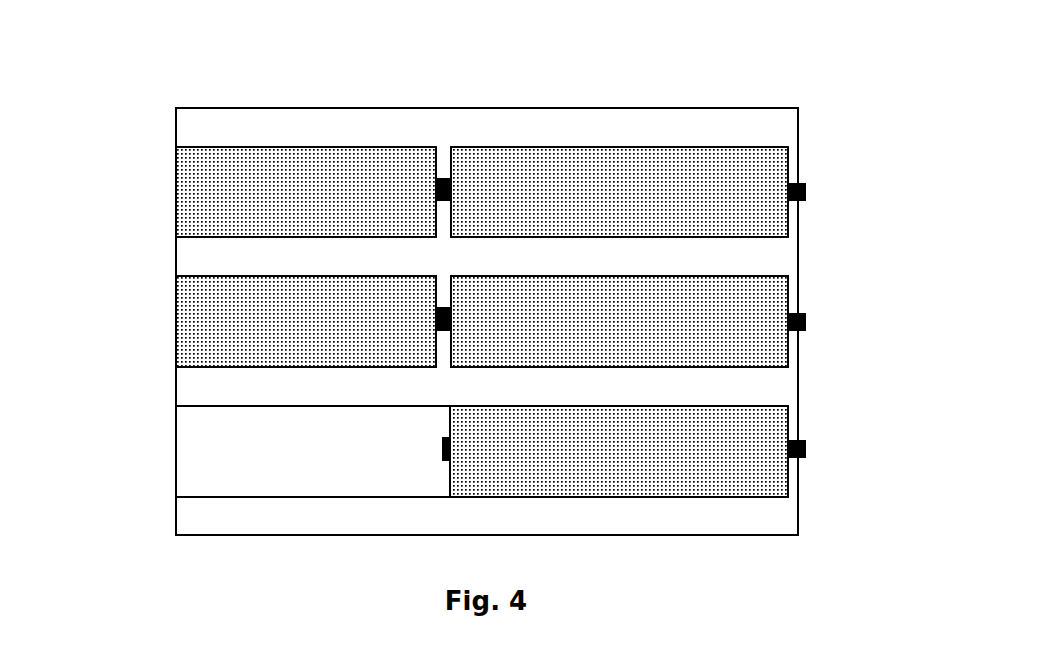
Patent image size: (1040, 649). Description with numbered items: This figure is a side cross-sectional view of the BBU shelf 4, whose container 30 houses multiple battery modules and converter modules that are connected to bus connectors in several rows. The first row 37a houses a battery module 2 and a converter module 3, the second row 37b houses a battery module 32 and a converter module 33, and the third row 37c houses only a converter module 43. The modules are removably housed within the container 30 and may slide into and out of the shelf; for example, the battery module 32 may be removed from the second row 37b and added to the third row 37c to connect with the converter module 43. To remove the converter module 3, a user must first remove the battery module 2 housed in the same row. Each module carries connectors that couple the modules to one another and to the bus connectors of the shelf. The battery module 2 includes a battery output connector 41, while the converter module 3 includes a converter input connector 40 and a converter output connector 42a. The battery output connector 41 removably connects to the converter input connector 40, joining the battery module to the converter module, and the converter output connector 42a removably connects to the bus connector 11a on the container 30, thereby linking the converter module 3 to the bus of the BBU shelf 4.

The BBU shelf 4 is at (180, 93).
The container 30 is at (798, 497).
The first row 37a is at (113, 186).
The second row 37b is at (113, 321).
The third row 37c is at (113, 458).
The battery module 2 is at (306, 192).
The converter module 3 is at (619, 192).
The battery module 32 is at (306, 321).
The converter module 33 is at (619, 321).
The converter module 43 is at (619, 451).
The battery output connector 41 is at (428, 178).
The converter input connector 40 is at (465, 162).
The converter output connector 42a is at (779, 183).
The bus connector 11a is at (828, 167).